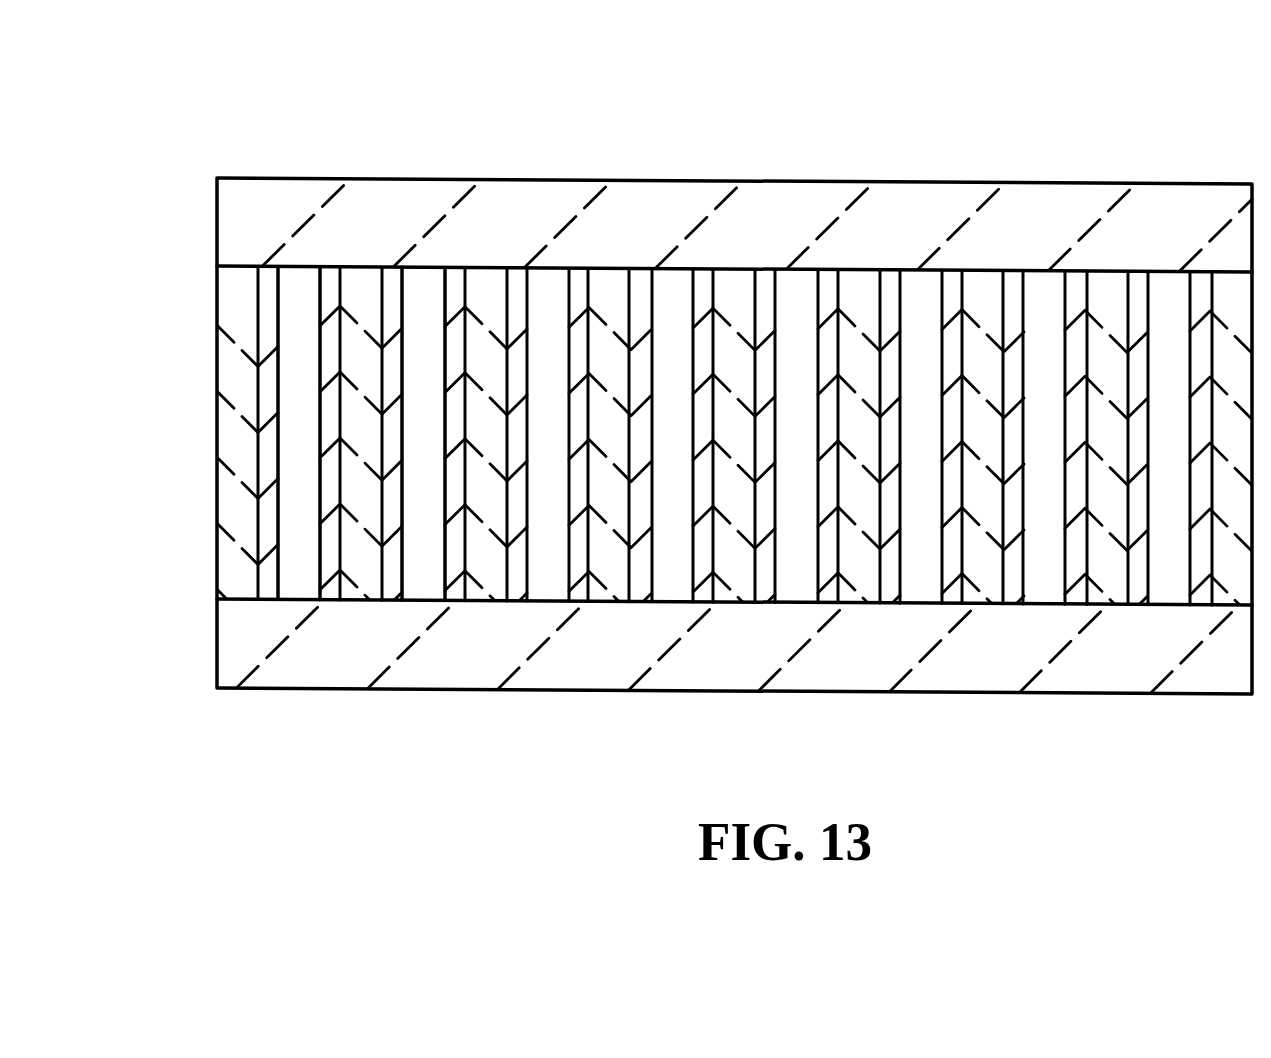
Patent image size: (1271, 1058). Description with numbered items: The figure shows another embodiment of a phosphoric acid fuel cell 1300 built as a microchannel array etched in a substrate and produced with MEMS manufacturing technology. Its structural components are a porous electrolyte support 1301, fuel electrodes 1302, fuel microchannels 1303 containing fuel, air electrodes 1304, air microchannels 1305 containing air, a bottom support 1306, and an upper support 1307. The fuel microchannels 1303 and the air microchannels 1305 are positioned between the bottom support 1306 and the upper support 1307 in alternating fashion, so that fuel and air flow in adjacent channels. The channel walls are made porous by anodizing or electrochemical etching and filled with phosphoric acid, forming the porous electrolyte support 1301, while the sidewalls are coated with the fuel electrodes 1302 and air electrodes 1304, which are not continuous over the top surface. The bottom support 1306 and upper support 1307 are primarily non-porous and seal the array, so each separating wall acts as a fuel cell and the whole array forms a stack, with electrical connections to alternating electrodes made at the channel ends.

The phosphoric acid fuel cell 1300 is at (398, 57).
The porous electrolyte support 1301 is at (215, 450).
The fuel electrodes 1302 is at (317, 572).
The fuel microchannels 1303 is at (305, 290).
The air electrodes 1304 is at (448, 558).
The air microchannels 1305 is at (424, 286).
The bottom support 1306 is at (1133, 698).
The upper support 1307 is at (1125, 186).